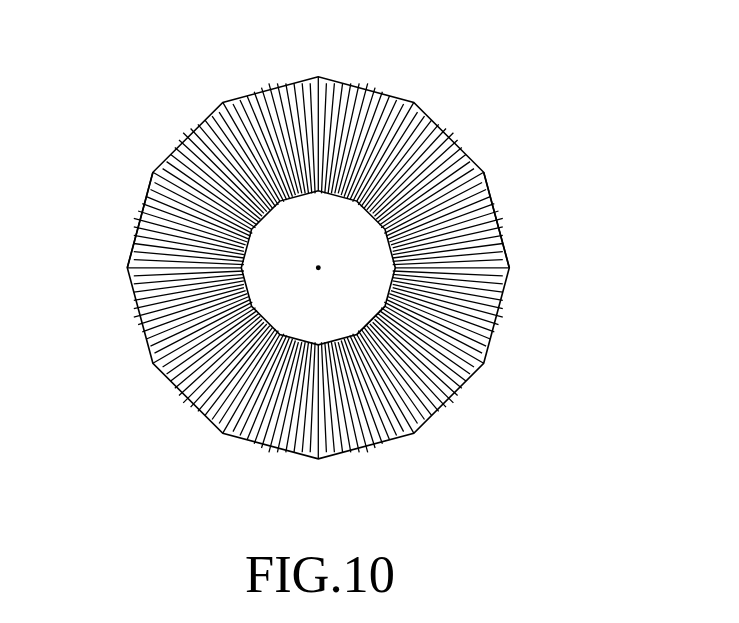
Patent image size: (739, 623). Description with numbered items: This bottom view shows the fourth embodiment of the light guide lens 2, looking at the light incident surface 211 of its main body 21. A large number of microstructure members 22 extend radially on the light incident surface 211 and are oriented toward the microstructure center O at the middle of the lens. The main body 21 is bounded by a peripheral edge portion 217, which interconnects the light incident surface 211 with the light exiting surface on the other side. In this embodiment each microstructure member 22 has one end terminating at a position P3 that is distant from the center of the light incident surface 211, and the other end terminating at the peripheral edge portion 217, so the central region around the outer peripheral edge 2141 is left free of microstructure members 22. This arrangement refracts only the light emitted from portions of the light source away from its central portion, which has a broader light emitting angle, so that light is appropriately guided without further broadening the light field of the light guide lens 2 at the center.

The light guide lens 2 is at (168, 111).
The main body 21 is at (353, 84).
The microstructure members 22 is at (466, 158).
The light incident surface 211 is at (497, 210).
The peripheral edge portion 217 is at (144, 205).
The outer peripheral edge 2141 is at (300, 343).
The microstructure center O is at (322, 267).
The position P3 is at (397, 338).